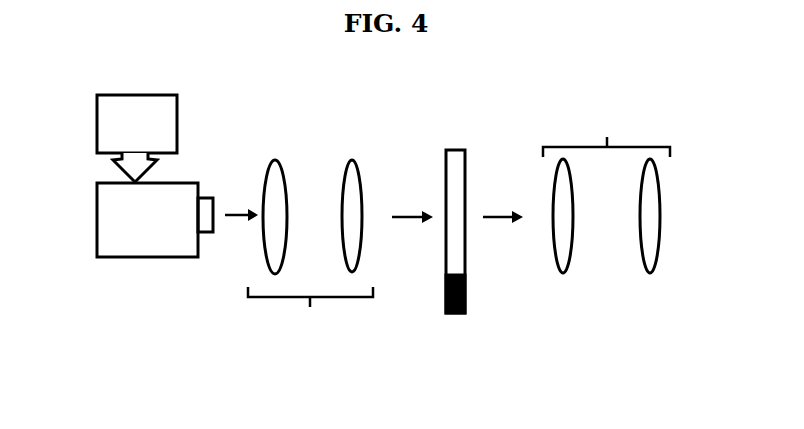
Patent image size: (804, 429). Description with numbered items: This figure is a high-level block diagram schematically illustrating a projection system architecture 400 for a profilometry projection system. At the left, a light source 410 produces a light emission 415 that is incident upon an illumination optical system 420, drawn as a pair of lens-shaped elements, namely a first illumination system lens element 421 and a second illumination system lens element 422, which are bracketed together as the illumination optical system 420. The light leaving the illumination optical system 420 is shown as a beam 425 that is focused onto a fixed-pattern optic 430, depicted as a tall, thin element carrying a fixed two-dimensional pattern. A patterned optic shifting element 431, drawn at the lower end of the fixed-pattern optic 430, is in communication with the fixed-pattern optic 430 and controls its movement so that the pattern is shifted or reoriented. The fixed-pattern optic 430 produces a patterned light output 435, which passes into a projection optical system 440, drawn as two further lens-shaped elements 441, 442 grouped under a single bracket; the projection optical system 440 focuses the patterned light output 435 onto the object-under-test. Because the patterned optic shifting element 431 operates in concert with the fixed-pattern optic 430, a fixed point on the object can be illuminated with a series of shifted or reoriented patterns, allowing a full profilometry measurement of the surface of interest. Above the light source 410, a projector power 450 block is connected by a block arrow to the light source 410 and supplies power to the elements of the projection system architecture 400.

The projection system architecture 400 is at (200, 364).
The light source 410 is at (160, 257).
The light emission 415 is at (246, 208).
The illumination optical system 420 is at (310, 311).
The first illumination system lens element 421 is at (270, 160).
The second illumination system lens element 422 is at (348, 160).
The collimated beam 425 is at (422, 210).
The fixed-pattern optic 430 is at (453, 150).
The patterned optic shifting element 431 is at (452, 313).
The patterned light output 435 is at (502, 210).
The projection optical system 440 is at (606, 135).
The third lens 441 is at (560, 272).
The fourth lens 442 is at (648, 272).
The projector power 450 is at (170, 95).